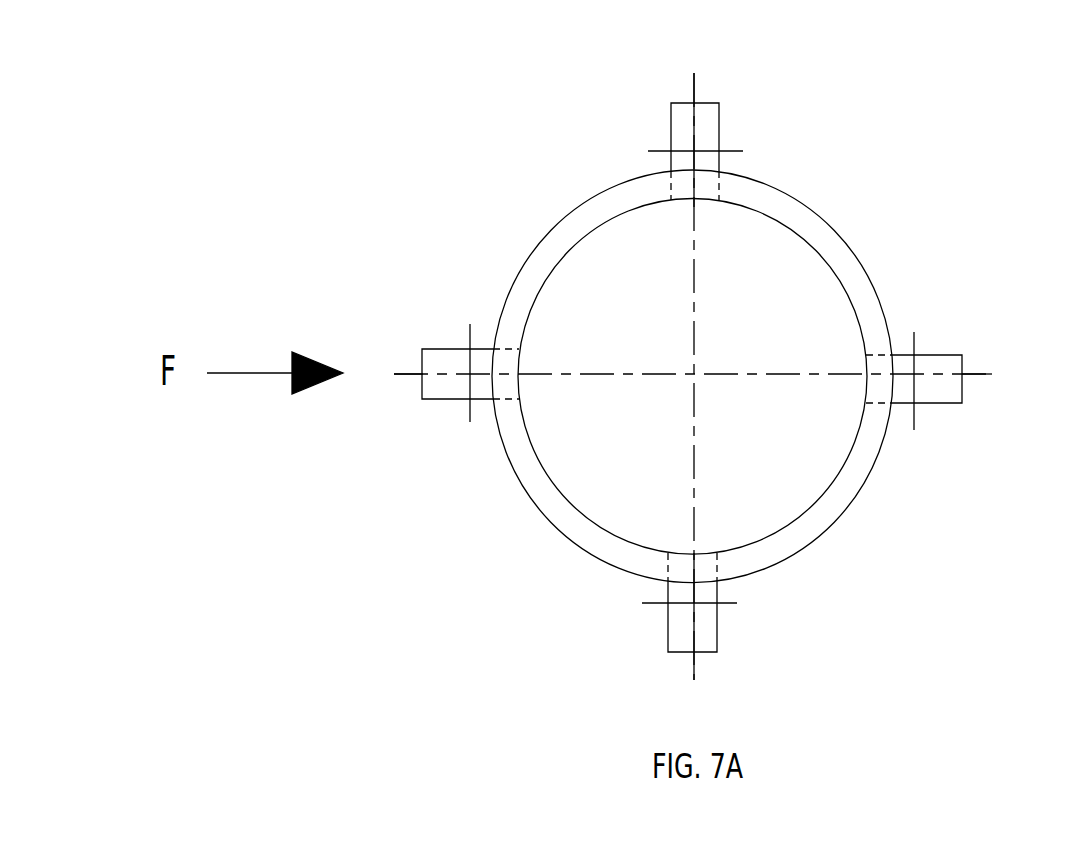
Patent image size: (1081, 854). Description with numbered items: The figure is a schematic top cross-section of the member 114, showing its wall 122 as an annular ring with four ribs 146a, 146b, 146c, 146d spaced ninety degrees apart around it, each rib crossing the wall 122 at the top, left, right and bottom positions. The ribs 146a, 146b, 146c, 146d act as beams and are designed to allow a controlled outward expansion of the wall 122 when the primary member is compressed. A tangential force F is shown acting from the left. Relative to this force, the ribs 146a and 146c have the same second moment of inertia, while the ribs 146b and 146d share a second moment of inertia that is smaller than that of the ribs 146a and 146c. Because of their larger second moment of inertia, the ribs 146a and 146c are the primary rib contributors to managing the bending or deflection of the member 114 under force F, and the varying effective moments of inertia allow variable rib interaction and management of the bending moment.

The inlet hub assembly 114 is at (501, 173).
The wall 122 is at (543, 502).
The rib 146a is at (440, 388).
The rib 146b is at (708, 129).
The rib 146c is at (942, 367).
The rib 146d is at (705, 632).